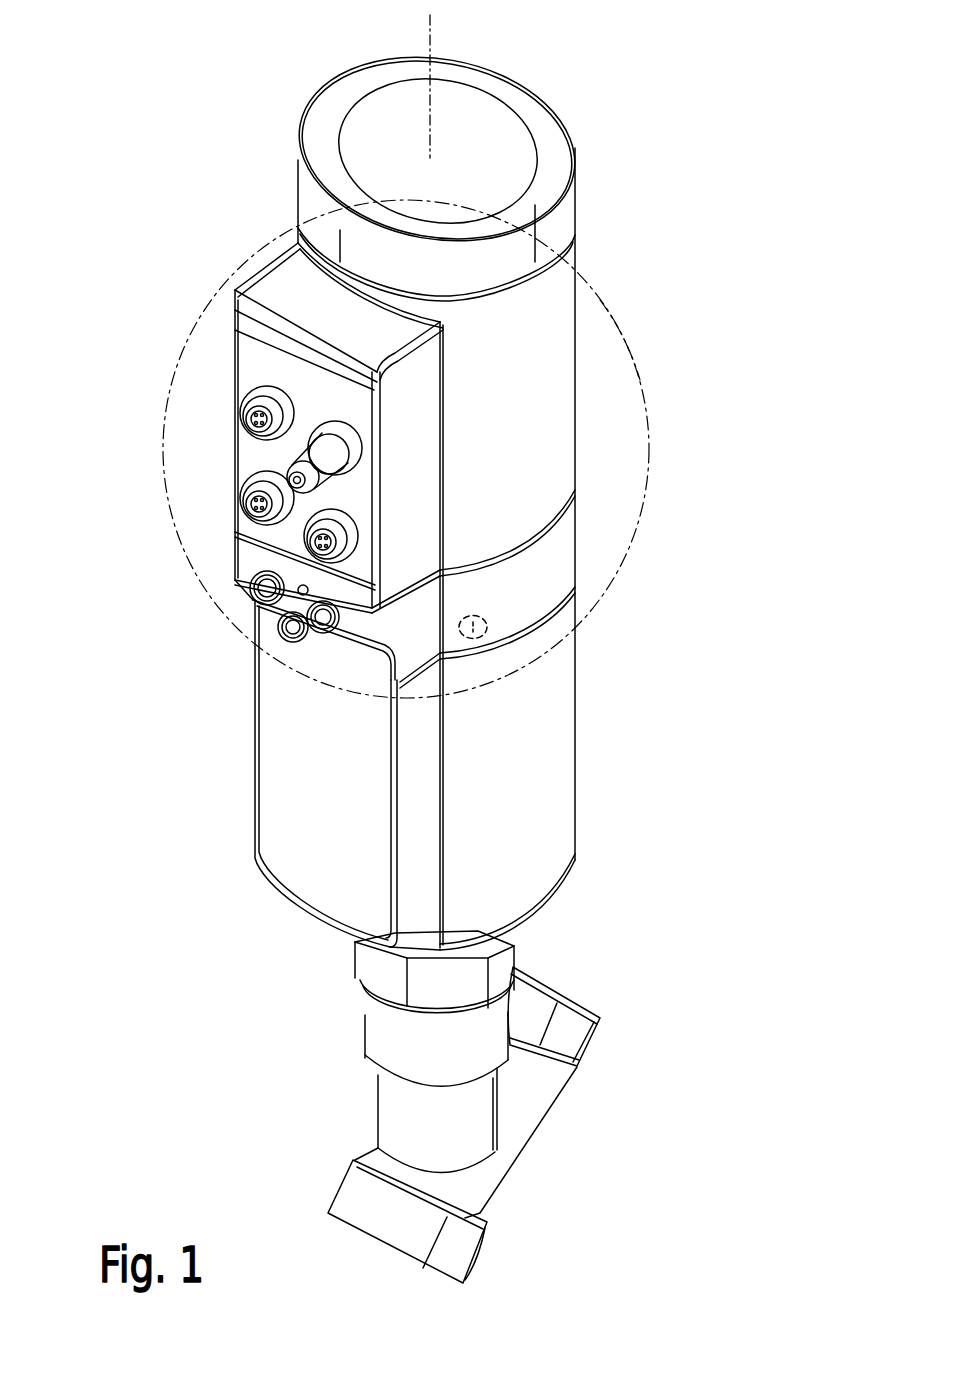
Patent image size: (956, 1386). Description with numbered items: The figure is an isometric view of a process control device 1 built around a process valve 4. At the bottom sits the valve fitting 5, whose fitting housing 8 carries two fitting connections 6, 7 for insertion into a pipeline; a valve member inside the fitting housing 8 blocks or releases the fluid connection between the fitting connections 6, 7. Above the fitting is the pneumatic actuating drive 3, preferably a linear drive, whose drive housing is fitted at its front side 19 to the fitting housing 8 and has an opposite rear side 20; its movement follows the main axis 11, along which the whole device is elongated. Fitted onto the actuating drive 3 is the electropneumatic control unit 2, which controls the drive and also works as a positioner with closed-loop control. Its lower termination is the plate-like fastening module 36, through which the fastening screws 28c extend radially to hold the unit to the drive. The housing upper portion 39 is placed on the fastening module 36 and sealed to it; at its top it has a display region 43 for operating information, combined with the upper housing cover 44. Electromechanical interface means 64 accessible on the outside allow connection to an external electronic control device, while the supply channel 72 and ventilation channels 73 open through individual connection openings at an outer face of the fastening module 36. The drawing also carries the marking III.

The process control device 1 is at (666, 100).
The electropneumatic control unit 2 is at (173, 97).
The pneumatic actuating drive 3 is at (173, 478).
The process valve 4 is at (732, 604).
The valve fitting 5 is at (628, 1038).
The fitting connection 6 is at (380, 1247).
The fitting connection 7 is at (540, 977).
The fitting housing 8 is at (475, 1133).
The main axis 11 is at (430, 22).
The front side 19 is at (348, 968).
The rear side 20 is at (548, 628).
The fastening screws 28c is at (473, 641).
The fastening module 36 is at (580, 560).
The housing upper portion 39 is at (575, 358).
The display region 43 is at (378, 137).
The upper housing cover 44 is at (562, 210).
The electromechanical interface means 64 is at (312, 548).
The supply channel 72 is at (293, 632).
The ventilation channel 73 is at (262, 590).
The section line III is at (605, 305).